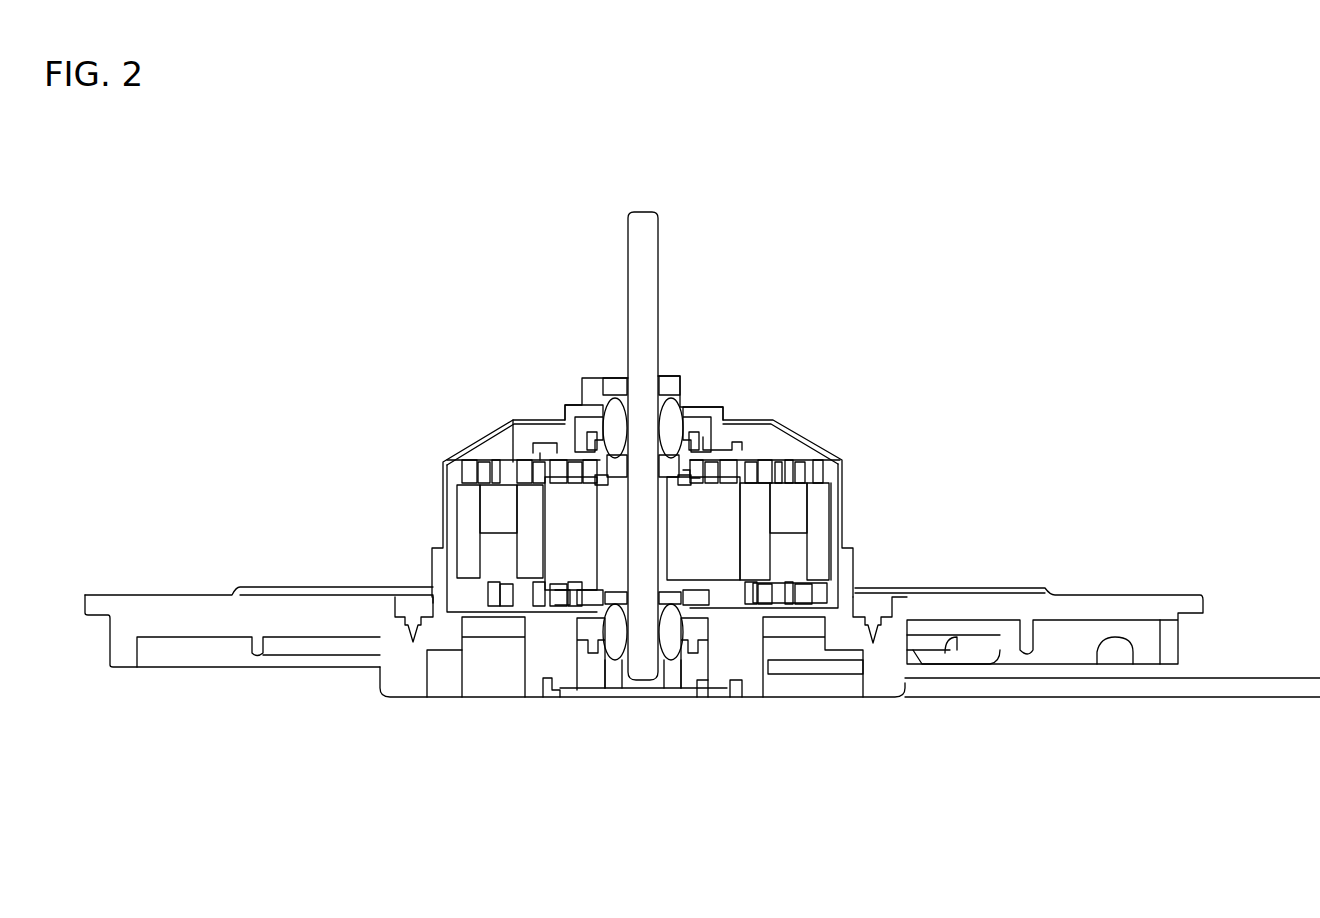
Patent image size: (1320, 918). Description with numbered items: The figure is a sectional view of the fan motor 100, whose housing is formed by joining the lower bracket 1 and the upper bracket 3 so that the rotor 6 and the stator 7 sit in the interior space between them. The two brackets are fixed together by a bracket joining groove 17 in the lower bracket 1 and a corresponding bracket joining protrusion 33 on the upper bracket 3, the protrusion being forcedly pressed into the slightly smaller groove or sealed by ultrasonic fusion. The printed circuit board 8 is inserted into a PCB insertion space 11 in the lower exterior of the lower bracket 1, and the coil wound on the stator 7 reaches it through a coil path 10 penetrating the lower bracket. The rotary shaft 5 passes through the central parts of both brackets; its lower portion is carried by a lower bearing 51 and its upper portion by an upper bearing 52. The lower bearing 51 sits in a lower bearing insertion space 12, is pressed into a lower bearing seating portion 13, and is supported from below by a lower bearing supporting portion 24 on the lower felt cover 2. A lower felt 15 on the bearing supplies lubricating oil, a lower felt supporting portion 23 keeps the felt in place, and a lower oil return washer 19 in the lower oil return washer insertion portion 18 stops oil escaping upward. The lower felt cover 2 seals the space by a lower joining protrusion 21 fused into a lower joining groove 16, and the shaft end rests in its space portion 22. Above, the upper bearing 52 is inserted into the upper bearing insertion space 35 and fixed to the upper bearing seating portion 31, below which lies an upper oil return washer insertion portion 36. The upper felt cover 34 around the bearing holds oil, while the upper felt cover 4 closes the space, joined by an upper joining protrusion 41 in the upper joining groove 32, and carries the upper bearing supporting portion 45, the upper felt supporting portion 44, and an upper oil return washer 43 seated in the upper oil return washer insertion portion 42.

The fan motor 100 is at (364, 290).
The lower bracket 1 is at (395, 678).
The lower felt cover 2 is at (587, 680).
The upper bracket 3 is at (840, 506).
The upper felt cover 4 is at (513, 445).
The rotary shaft 5 is at (643, 212).
The rotor 6 is at (565, 518).
The stator 7 is at (492, 530).
The printed circuit board 8 is at (806, 612).
The coil path 10 is at (796, 625).
The PCB insertion space 11 is at (445, 680).
The lower bearing insertion space 12 is at (705, 668).
The lower bearing seating portion 13 is at (640, 688).
The lower felt 15 is at (558, 628).
The lower joining groove 16 is at (583, 645).
The bracket joining groove 17 is at (410, 613).
The lower oil return washer insertion portion 18 is at (470, 590).
The lower oil return washer 19 is at (850, 665).
The lower joining protrusion 21 is at (737, 690).
The space portion 22 is at (665, 662).
The lower felt supporting portion 23 is at (525, 618).
The lower bearing supporting portion 24 is at (618, 660).
The upper bearing seating portion 31 is at (673, 385).
The upper joining groove 32 is at (543, 453).
The bracket joining protrusion 33 is at (876, 638).
The upper felt cover 34 is at (703, 410).
The upper bearing insertion space 35 is at (703, 443).
The upper oil return washer insertion portion 36 is at (690, 472).
The upper joining protrusion 41 is at (742, 450).
The upper oil return washer insertion portion 42 is at (607, 455).
The upper oil return washer 43 is at (580, 440).
The upper felt supporting portion 44 is at (725, 440).
The upper bearing supporting portion 45 is at (694, 422).
The lower bearing 51 is at (626, 690).
The upper bearing 52 is at (616, 398).